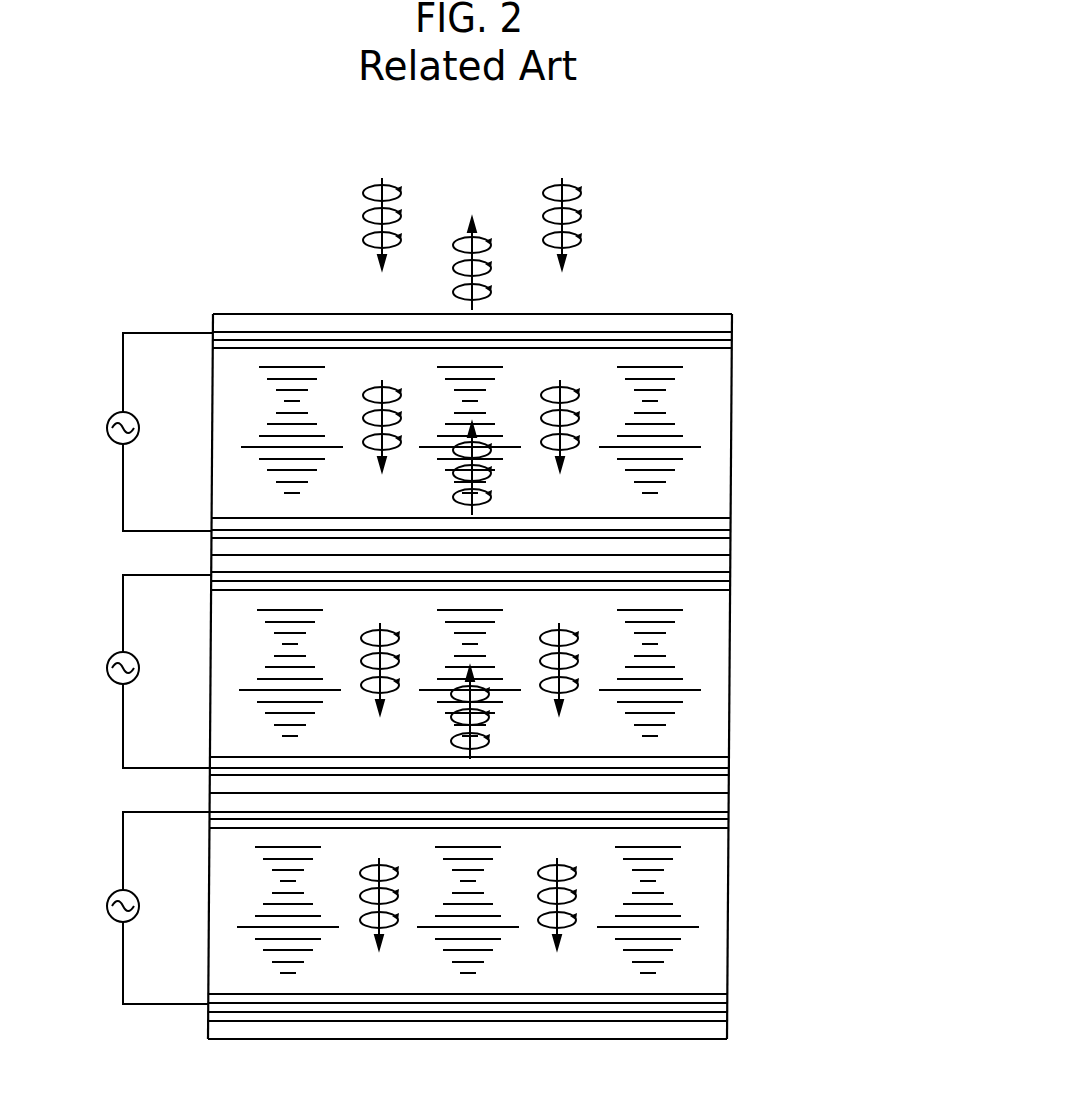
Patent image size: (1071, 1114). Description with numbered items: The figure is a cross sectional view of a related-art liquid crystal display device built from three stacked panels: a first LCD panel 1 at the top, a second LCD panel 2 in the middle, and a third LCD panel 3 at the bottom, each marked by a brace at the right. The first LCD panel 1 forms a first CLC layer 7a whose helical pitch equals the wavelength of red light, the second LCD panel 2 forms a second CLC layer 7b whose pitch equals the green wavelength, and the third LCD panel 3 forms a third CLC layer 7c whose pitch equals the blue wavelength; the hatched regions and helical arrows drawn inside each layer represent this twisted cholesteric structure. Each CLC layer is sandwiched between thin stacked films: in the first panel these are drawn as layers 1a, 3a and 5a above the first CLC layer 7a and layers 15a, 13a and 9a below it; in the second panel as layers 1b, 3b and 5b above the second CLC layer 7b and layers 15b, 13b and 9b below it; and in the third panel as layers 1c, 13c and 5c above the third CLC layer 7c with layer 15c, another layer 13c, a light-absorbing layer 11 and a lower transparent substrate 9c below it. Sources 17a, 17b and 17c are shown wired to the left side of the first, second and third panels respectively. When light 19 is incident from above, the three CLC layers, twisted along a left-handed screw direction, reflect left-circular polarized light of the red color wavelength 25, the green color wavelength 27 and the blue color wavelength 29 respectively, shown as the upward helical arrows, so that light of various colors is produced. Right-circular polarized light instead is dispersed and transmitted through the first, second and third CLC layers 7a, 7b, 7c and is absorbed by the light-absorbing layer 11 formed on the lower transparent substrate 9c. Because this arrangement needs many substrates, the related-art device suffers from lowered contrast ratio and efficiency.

The first LCD panel 1 is at (812, 315).
The second LCD panel 2 is at (812, 560).
The third LCD panel 3 is at (812, 798).
The first polarizer of first unit 1a is at (732, 324).
The first retardation film of first unit 3a is at (732, 338).
The first substrate of first unit 5a is at (732, 347).
The first CLC layer 7a is at (516, 441).
The second substrate of first unit 15a is at (731, 520).
The second retardation film of first unit 13a is at (731, 531).
The second polarizer of first unit 9a is at (731, 547).
The first polarizer of second unit 1b is at (731, 572).
The first retardation film of second unit 3b is at (731, 581).
The first substrate of second unit 5b is at (731, 590).
The second CLC layer 7b is at (515, 684).
The second substrate of second unit 15b is at (730, 758).
The second retardation film of second unit 13b is at (730, 768).
The second polarizer of second unit 9b is at (730, 786).
The first polarizer of third unit 1c is at (730, 812).
The retardation film of third unit 13c is at (730, 820).
The first substrate of third unit 5c is at (730, 829).
The third CLC layer 7c is at (728, 930).
The second substrate of third unit 15c is at (728, 995).
The light-absorbing layer 11 is at (728, 1016).
The lower transparent substrate 9c is at (728, 1036).
The first voltage source 17a is at (110, 440).
The second voltage source 17b is at (110, 680).
The third voltage source 17c is at (110, 918).
The light 19 is at (556, 180).
The red color wavelength 25 is at (484, 278).
The green color wavelength 27 is at (484, 485).
The blue color wavelength 29 is at (482, 728).